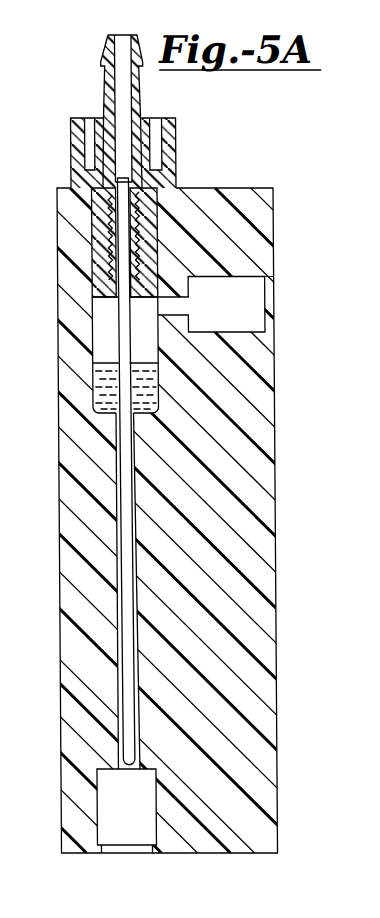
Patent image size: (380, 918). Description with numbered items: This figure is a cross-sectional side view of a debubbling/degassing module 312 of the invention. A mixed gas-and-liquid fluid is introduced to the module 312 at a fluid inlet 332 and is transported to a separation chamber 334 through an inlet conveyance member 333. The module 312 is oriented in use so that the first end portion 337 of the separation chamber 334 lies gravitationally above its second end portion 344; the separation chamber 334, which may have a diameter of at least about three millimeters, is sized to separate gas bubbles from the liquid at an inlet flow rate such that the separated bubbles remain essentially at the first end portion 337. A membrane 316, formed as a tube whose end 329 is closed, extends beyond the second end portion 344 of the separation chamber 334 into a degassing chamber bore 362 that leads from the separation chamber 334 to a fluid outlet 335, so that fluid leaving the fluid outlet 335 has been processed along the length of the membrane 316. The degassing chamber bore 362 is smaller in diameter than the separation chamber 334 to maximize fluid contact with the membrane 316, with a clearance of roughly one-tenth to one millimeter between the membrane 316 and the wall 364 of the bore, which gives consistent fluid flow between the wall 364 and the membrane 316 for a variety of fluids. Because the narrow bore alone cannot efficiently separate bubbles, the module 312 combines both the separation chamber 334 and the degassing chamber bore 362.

The module 312 is at (250, 172).
The membrane 316 is at (138, 453).
The end 329 is at (122, 767).
The fluid inlet 332 is at (273, 278).
The inlet conveyance member 333 is at (168, 297).
The separation chamber 334 is at (141, 348).
The fluid outlet 335 is at (96, 850).
The first end portion 337 is at (99, 313).
The second end portion 344 is at (96, 397).
The degassing chamber bore 362 is at (117, 531).
The wall 364 is at (136, 596).